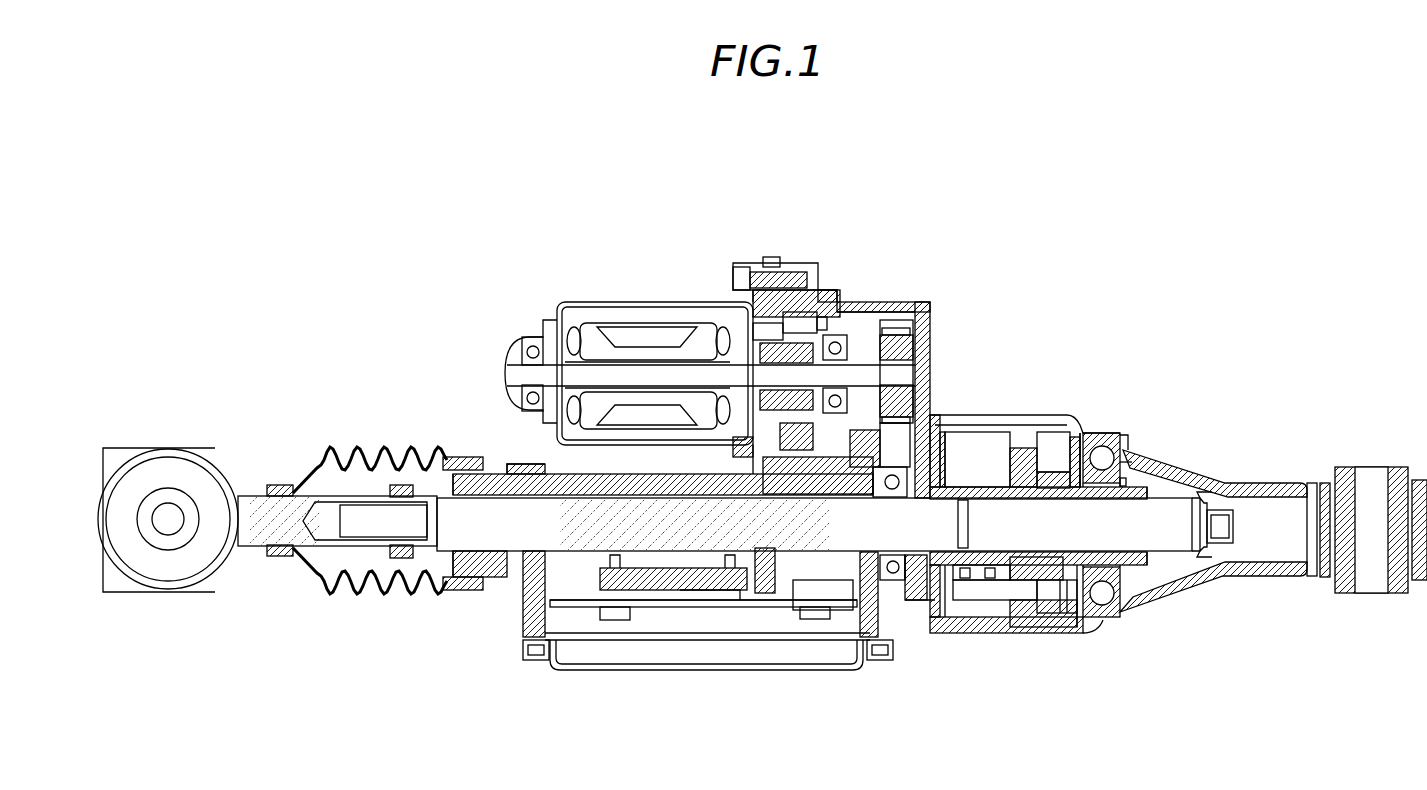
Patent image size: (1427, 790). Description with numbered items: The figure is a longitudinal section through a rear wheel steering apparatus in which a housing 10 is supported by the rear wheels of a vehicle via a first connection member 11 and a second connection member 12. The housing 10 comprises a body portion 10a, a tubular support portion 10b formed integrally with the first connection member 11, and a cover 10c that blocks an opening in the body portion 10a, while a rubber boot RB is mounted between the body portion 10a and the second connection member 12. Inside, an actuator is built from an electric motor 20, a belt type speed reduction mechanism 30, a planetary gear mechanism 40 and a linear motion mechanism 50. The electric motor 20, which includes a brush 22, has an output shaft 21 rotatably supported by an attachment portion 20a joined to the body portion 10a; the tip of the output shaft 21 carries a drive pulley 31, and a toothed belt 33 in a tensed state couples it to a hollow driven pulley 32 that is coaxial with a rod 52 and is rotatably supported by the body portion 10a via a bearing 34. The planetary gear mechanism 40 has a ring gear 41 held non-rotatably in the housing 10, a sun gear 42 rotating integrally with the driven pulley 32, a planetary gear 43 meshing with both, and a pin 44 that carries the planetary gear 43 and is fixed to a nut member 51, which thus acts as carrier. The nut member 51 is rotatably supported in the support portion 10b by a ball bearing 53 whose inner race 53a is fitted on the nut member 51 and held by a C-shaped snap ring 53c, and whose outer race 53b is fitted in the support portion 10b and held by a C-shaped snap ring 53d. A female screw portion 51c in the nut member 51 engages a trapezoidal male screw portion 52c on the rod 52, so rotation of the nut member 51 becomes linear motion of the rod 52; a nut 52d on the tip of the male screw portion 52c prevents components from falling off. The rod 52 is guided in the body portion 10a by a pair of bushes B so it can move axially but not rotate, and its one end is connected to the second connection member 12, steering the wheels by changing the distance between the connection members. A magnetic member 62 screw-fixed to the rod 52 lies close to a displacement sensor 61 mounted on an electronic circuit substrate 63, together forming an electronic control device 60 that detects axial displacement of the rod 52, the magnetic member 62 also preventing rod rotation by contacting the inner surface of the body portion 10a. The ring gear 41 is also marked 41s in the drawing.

The housing 10 is at (915, 300).
The body portion 10a is at (888, 303).
The support portion 10b is at (1253, 568).
The cover 10c is at (770, 668).
The first connection member 11 is at (1370, 467).
The second connection member 12 is at (222, 453).
The electric motor 20 is at (616, 300).
The attachment portion 20a is at (738, 306).
The output shaft 21 is at (856, 375).
The brush 22 is at (811, 300).
The belt type speed reduction mechanism 30 is at (917, 395).
The drive pulley 31 is at (912, 340).
The driven pulley 32 is at (914, 582).
The belt 33 is at (907, 437).
The bearing 34 is at (893, 585).
The planetary gear mechanism 40 is at (990, 465).
The ring gear 41 is at (962, 602).
The nut outer surface 41s is at (937, 592).
The sun gear 42 is at (1000, 488).
The planetary gear 43 is at (978, 612).
The pin 44 is at (1026, 597).
The linear motion mechanism 50 is at (1055, 460).
The nut member 51 is at (1065, 597).
The female screw portion 51c is at (1145, 545).
The rod 52 is at (482, 545).
The male screw portion 52c is at (1172, 553).
The nut 52d is at (1212, 548).
The bearing 53 is at (1108, 613).
The inner race 53a is at (1115, 462).
The outer race 53b is at (1112, 452).
The C-shaped snap ring 53c is at (1123, 482).
The C-shaped snap ring 53d is at (1092, 430).
The electronic control device 60 is at (728, 628).
The displacement sensor 61 is at (680, 607).
The magnetic member 62 is at (706, 590).
The electronic circuit substrate 63 is at (820, 612).
The rubber boot RB is at (345, 440).
The bushes B is at (520, 470).